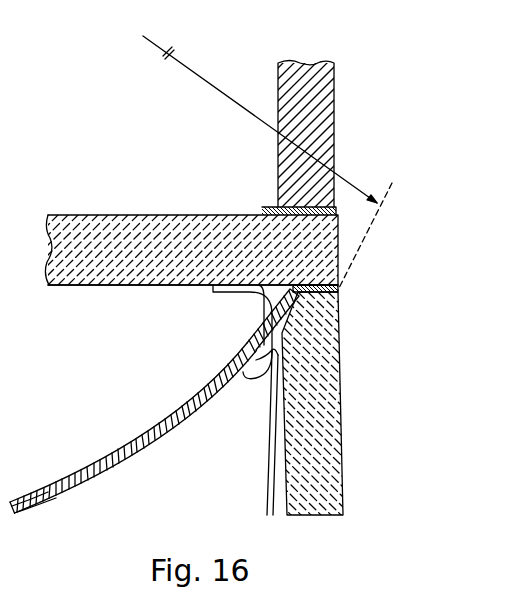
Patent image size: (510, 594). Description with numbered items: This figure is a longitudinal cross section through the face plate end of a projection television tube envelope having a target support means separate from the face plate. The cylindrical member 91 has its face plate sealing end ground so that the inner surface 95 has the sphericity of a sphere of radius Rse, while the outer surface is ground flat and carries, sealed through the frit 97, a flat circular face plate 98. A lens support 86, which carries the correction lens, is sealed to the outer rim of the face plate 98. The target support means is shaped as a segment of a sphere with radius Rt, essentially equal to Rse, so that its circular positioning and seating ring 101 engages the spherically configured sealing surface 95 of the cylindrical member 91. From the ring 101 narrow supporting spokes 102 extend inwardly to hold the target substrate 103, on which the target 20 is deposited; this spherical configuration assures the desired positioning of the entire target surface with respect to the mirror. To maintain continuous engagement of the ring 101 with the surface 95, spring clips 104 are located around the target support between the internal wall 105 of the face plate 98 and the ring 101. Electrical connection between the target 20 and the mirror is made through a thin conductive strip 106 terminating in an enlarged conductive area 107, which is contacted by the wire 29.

The lens support 86 is at (308, 97).
The face plate 98 is at (180, 222).
The frit 97 is at (338, 291).
The inner surface 95 is at (300, 311).
The cylindrical member 91 is at (310, 467).
The positioning and seating ring 101 is at (310, 347).
The spring clip 104 is at (252, 298).
The internal wall 105 is at (128, 284).
The enlarged conductive area 107 is at (262, 378).
The wire 29 is at (274, 441).
The supporting spoke 102 is at (157, 423).
The thin conductive strip 106 is at (100, 483).
The target substrate 103 is at (27, 500).
The target 20 is at (33, 516).
The radius of sphere of sealing surface Rse is at (202, 80).
The radius of target support means Rt is at (222, 98).